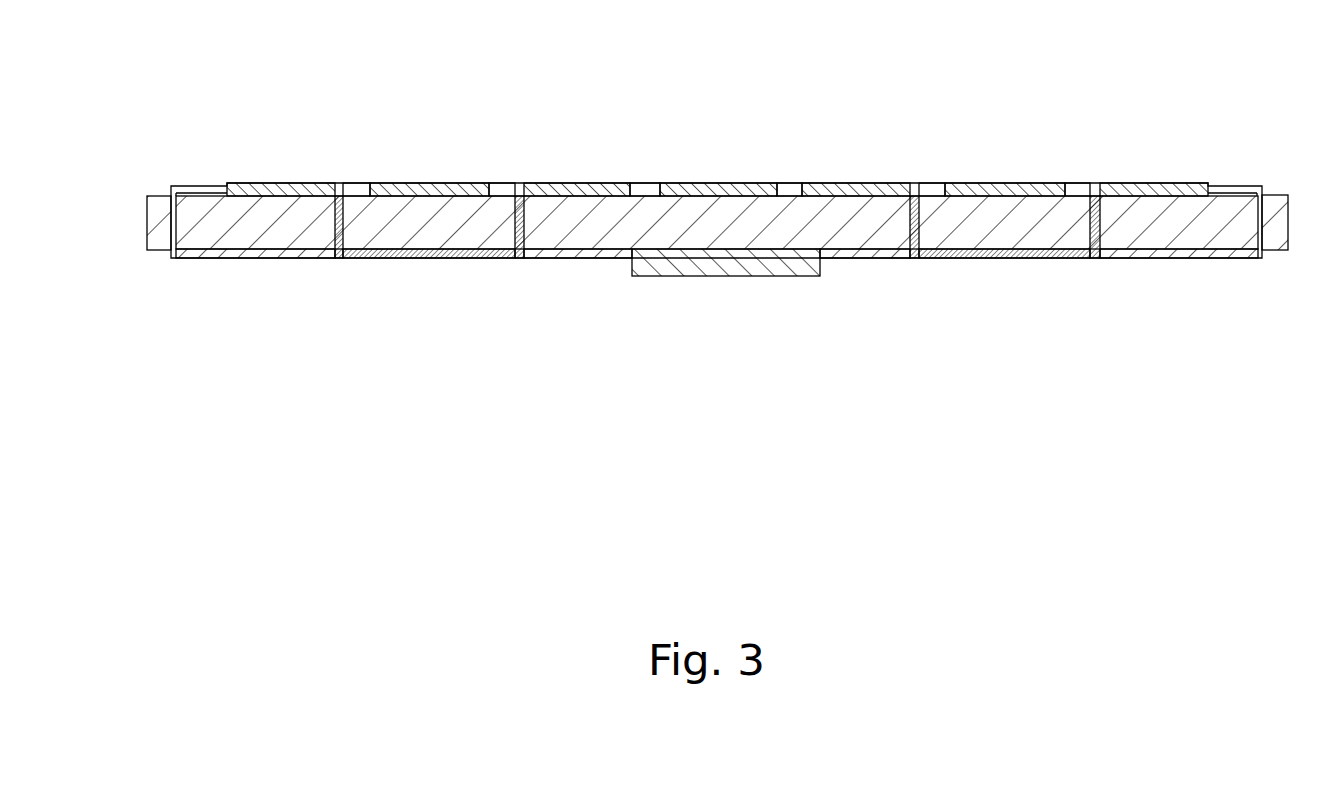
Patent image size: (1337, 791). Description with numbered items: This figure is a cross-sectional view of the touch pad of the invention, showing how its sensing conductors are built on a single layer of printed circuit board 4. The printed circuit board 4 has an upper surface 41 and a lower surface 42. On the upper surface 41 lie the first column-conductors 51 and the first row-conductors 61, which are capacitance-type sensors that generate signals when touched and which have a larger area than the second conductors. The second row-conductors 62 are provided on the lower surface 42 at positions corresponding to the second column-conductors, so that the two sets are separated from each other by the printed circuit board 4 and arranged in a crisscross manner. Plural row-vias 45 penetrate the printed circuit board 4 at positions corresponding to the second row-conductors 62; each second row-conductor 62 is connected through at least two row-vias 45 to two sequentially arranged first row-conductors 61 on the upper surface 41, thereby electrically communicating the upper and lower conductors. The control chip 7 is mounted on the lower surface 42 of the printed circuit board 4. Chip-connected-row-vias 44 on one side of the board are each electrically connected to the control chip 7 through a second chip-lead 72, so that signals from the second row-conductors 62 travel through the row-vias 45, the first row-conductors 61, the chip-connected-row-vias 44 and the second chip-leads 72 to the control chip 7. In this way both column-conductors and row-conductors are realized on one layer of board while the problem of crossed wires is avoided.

The printed circuit board 4 is at (1218, 223).
The upper surface 41 is at (1277, 197).
The lower surface 42 is at (1277, 250).
The chip-connected-row-vias 44 is at (169, 216).
The row-vias 45 is at (342, 200).
The first column-conductors 51 is at (438, 182).
The first row-conductors 61 is at (283, 183).
The second row-conductors 62 is at (455, 257).
The control chip 7 is at (728, 276).
The second chip-lead 72 is at (263, 252).